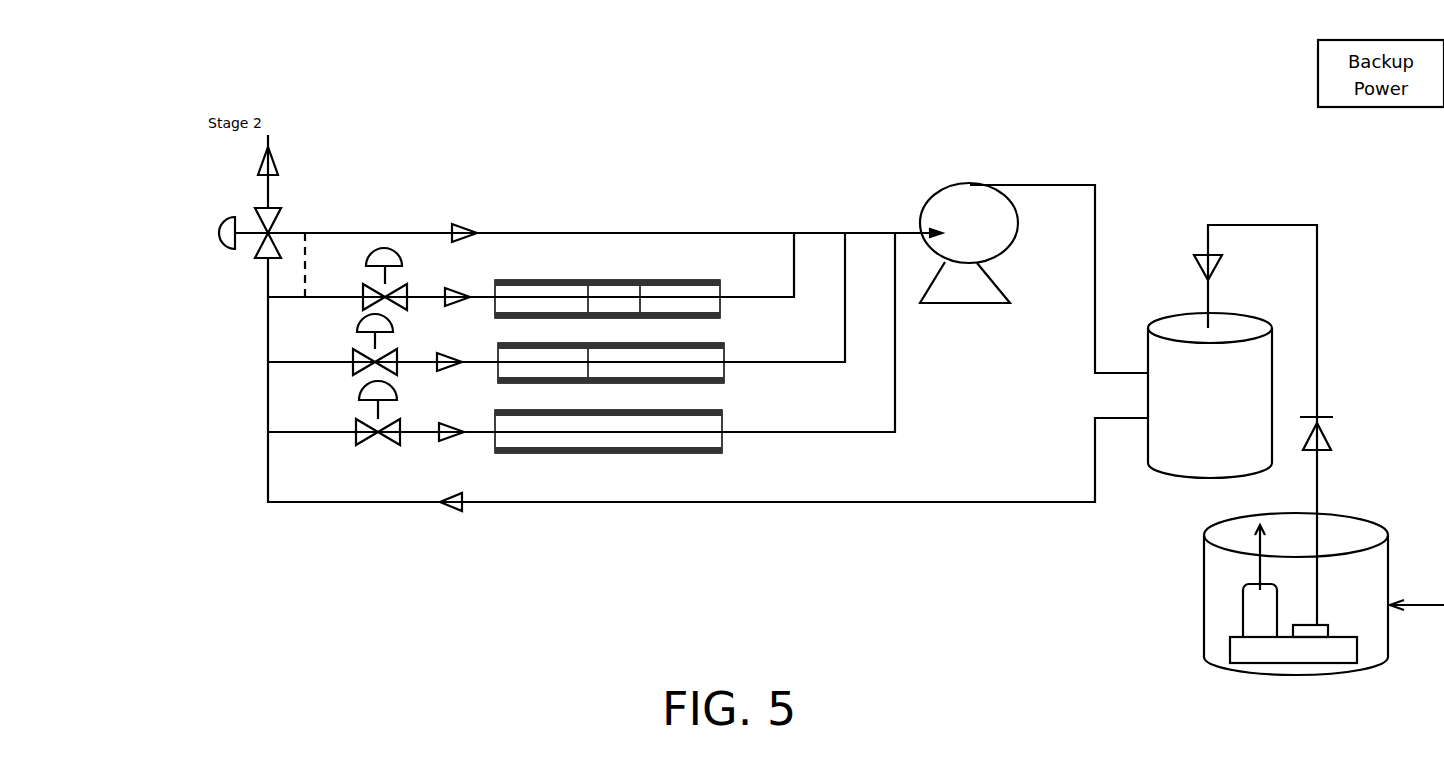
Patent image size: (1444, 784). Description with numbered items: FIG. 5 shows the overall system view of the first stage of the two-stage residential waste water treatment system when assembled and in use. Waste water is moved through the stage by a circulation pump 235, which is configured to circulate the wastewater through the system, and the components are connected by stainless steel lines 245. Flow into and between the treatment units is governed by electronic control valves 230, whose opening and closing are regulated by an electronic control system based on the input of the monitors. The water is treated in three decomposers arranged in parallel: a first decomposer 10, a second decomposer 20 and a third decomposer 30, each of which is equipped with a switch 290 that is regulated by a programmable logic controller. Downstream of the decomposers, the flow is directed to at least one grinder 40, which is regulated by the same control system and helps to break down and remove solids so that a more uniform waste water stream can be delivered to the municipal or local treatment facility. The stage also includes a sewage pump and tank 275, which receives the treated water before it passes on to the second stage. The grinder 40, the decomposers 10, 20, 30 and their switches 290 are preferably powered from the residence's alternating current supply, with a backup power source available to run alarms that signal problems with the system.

The first decomposer 10 is at (652, 290).
The second decomposer 20 is at (642, 358).
The third decomposer 30 is at (660, 437).
The grinder 40 is at (1240, 425).
The electronic control valve 230 is at (272, 230).
The circulation pump 235 is at (966, 222).
The stainless steel line 245 is at (372, 503).
The sewage pump and tank 275 is at (1324, 594).
The switch 290 is at (396, 253).